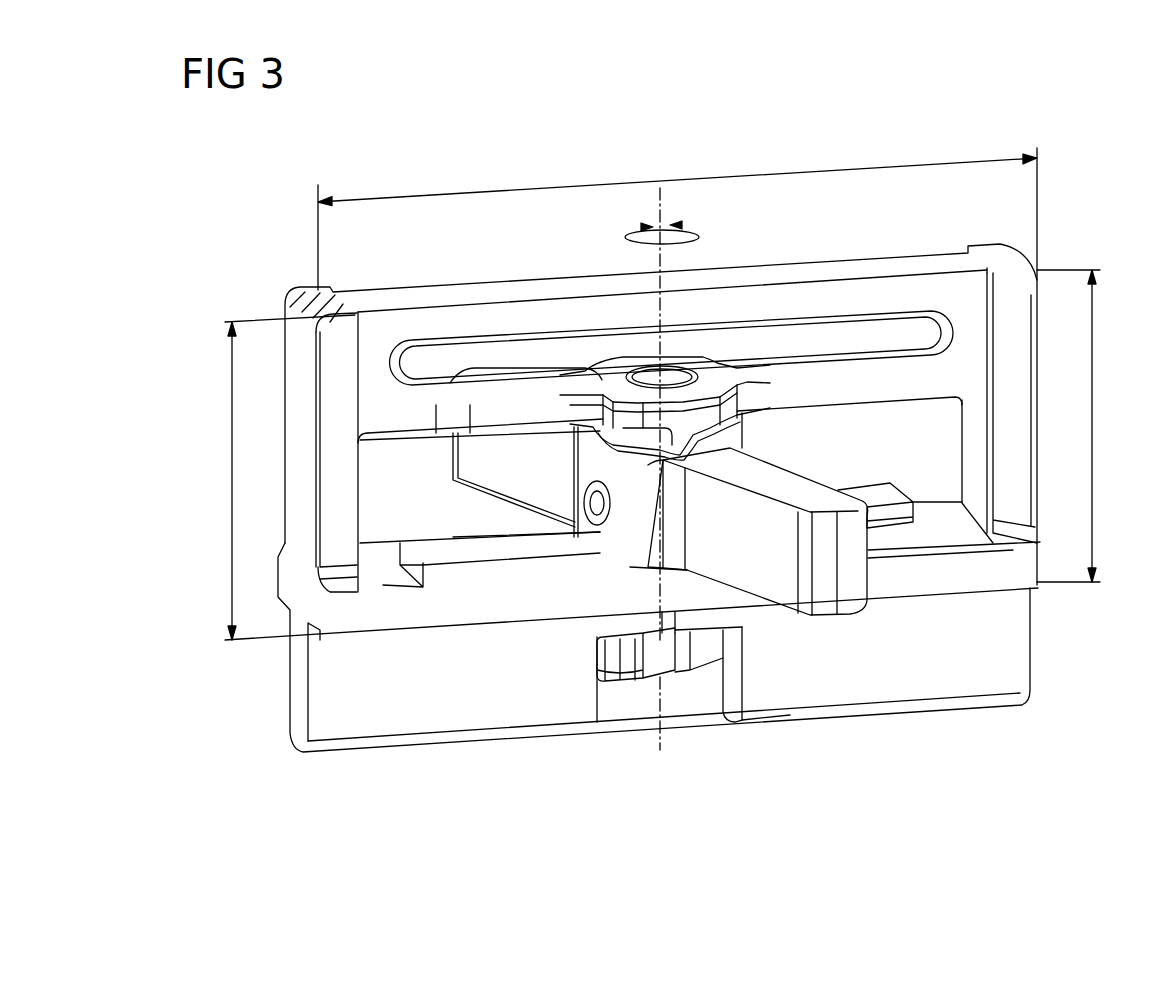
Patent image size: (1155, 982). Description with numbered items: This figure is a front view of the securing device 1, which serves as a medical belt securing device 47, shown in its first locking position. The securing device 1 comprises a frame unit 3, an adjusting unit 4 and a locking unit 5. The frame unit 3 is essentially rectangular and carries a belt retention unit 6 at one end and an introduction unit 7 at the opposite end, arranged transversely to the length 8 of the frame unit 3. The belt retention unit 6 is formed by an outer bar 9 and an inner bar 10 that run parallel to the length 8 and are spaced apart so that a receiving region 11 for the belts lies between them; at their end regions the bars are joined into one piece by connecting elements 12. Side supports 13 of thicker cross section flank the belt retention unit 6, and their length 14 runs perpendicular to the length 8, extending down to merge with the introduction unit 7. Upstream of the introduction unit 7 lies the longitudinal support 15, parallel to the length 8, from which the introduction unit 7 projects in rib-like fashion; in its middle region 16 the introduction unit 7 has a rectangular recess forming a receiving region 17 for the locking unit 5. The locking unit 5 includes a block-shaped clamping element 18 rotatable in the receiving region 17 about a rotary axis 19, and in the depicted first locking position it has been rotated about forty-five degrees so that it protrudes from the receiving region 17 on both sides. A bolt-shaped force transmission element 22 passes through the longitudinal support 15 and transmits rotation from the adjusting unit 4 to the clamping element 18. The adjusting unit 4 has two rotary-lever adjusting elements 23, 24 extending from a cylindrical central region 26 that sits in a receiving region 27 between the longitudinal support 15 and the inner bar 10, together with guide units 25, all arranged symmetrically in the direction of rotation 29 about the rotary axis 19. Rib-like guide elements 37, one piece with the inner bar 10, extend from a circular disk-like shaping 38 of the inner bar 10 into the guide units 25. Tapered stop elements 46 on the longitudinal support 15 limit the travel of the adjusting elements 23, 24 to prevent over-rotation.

The securing device 1 is at (250, 205).
The frame unit 3 is at (273, 291).
The adjusting unit 4 is at (799, 443).
The locking unit 5 is at (707, 699).
The belt retention unit 6 is at (867, 325).
The introduction unit 7 is at (980, 690).
The length of the frame unit 8 is at (618, 182).
The outer bar 9 is at (500, 320).
The inner bar 10 is at (437, 415).
The receiving region 11 is at (819, 330).
The connecting elements 12 is at (380, 368).
The side supports 13 is at (343, 408).
The length of the side supports 14 is at (232, 462).
The longitudinal support 15 is at (410, 610).
The middle region 16 is at (746, 693).
The receiving region 17 is at (610, 722).
The clamping element 18 is at (650, 673).
The rotary axis 19 is at (660, 200).
The force transmission element 22 is at (603, 500).
The adjusting element 23 is at (475, 420).
The adjusting element 24 is at (853, 597).
The guide unit 25 is at (588, 436).
The cylindrical central region 26 is at (623, 527).
The receiving region 27 is at (373, 534).
The direction of rotation 29 is at (676, 225).
The guide element 37 is at (693, 440).
The circular disk-like shaping 38 is at (613, 367).
The stop elements 46 is at (437, 550).
The medical belt securing device 47 is at (939, 753).